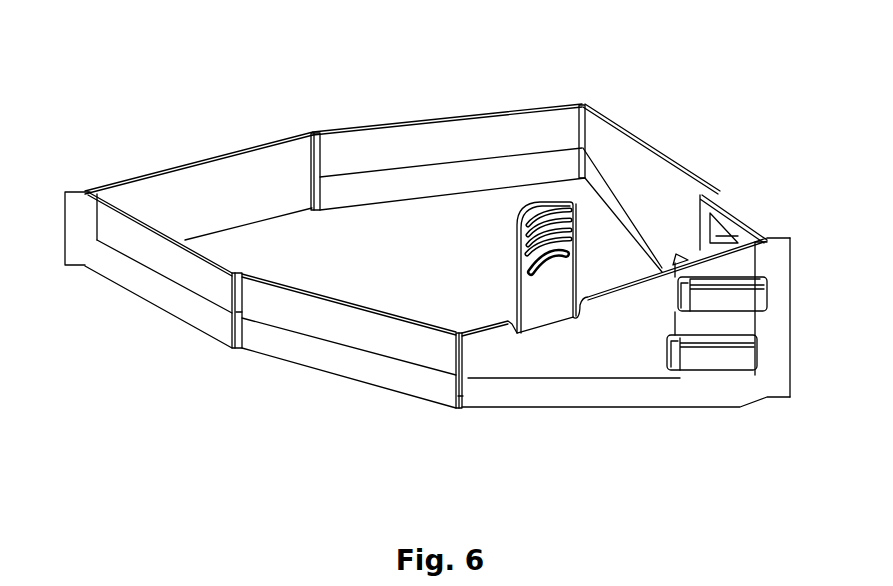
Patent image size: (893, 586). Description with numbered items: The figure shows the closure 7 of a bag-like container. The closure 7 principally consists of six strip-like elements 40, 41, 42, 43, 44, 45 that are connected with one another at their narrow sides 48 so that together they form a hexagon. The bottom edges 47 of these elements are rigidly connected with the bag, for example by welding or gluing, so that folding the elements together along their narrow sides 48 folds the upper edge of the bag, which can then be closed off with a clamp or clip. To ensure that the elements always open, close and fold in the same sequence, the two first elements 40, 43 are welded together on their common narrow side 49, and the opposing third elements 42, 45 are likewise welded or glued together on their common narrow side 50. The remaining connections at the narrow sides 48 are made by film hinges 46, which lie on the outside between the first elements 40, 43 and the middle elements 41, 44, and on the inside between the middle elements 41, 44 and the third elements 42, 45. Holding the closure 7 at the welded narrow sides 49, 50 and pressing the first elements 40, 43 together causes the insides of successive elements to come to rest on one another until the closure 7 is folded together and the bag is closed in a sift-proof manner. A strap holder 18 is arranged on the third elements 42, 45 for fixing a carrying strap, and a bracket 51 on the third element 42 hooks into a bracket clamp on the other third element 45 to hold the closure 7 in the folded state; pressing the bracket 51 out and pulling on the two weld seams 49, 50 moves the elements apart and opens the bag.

The closure 7 is at (185, 79).
The strap holder 18 is at (766, 227).
The first element 40 is at (188, 305).
The middle element 41 is at (405, 383).
The third element 42 is at (628, 358).
The first element 43 is at (189, 162).
The middle element 44 is at (424, 122).
The third element 45 is at (681, 163).
The film hinge 46 is at (318, 133).
The bottom edge 47 is at (187, 324).
The narrow side 48 is at (240, 315).
The common narrow side 49 is at (82, 212).
The common narrow side 50 is at (790, 340).
The bracket 51 is at (547, 293).